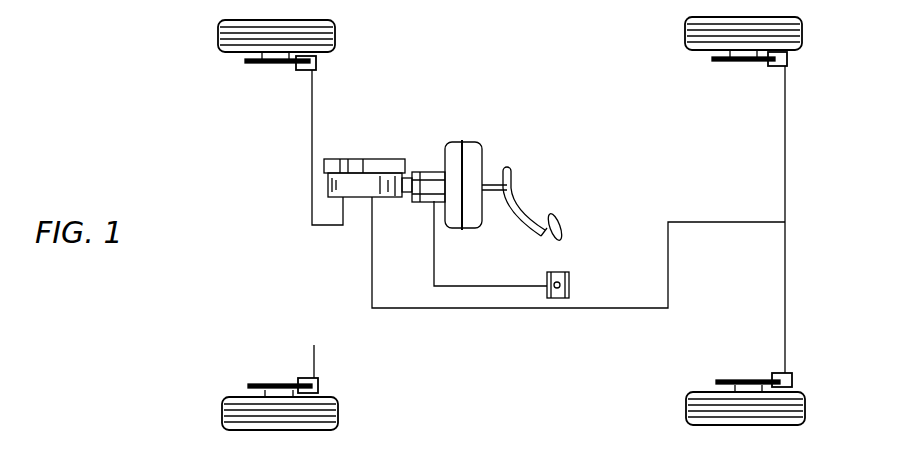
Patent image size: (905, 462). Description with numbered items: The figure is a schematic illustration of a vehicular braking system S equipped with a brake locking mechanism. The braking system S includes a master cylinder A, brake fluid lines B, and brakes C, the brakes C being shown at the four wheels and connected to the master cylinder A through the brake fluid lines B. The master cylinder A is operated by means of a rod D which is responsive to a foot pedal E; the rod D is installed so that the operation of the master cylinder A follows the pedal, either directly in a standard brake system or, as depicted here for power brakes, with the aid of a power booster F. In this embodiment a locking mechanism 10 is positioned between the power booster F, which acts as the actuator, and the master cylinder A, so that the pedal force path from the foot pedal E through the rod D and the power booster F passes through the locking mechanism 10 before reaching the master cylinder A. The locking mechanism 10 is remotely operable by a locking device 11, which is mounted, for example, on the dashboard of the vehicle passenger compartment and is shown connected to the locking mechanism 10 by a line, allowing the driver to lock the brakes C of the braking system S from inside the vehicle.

The vehicular braking system S is at (216, 311).
The master cylinder A is at (360, 172).
The brake fluid lines B is at (314, 345).
The brakes C is at (335, 36).
The rod D is at (493, 175).
The foot pedal E is at (562, 219).
The power booster F is at (474, 140).
The locking mechanism 10 is at (428, 170).
The locking device 11 is at (569, 280).